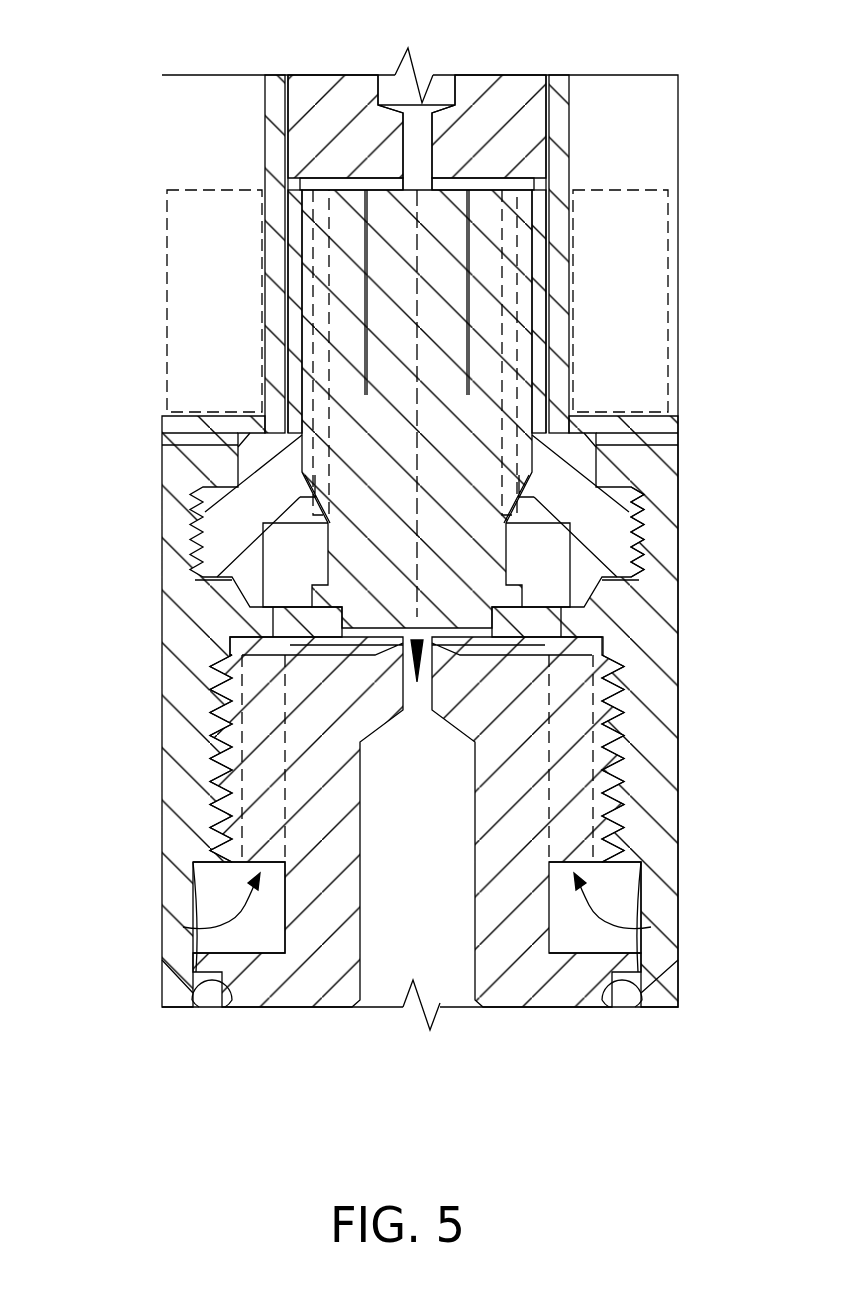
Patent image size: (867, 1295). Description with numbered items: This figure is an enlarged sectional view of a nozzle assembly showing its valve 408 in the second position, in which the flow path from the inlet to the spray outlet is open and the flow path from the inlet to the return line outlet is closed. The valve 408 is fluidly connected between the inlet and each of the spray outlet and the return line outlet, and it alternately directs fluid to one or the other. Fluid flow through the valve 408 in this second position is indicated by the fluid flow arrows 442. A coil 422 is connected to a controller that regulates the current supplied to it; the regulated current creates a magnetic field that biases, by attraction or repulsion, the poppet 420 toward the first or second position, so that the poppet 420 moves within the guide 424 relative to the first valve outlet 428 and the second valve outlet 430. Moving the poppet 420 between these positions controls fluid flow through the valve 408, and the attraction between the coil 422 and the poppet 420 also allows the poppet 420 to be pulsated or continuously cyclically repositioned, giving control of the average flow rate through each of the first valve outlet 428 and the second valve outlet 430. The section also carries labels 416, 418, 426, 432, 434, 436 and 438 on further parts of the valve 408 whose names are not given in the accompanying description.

The valve 408 is at (138, 205).
The coil 422 is at (165, 268).
The tube wall 436 is at (292, 352).
The guide 424 is at (543, 330).
The second valve outlet 430 is at (433, 158).
The top plate 434 is at (450, 210).
The poppet 420 is at (482, 262).
The flow passage 418 is at (313, 533).
The retaining washer 438 is at (330, 583).
The threaded connection 416 is at (610, 517).
The fitting 432 is at (403, 642).
The first valve outlet 428 is at (440, 655).
The fluid flow arrows 442 is at (470, 640).
The o-ring 426 is at (193, 937).